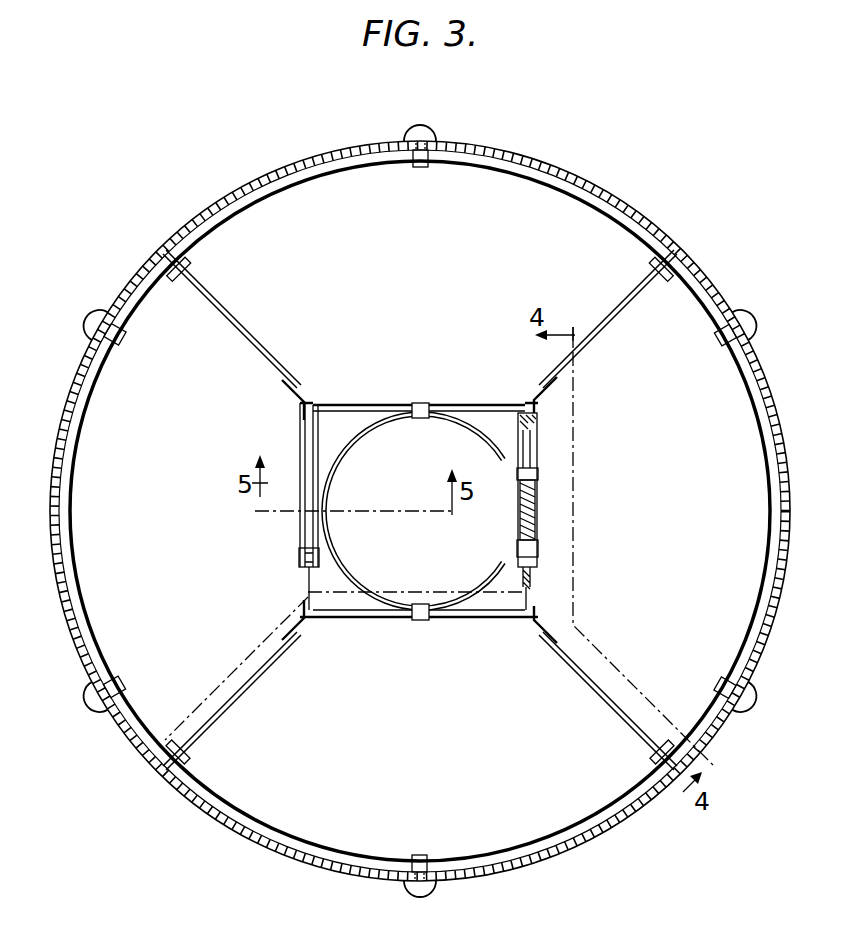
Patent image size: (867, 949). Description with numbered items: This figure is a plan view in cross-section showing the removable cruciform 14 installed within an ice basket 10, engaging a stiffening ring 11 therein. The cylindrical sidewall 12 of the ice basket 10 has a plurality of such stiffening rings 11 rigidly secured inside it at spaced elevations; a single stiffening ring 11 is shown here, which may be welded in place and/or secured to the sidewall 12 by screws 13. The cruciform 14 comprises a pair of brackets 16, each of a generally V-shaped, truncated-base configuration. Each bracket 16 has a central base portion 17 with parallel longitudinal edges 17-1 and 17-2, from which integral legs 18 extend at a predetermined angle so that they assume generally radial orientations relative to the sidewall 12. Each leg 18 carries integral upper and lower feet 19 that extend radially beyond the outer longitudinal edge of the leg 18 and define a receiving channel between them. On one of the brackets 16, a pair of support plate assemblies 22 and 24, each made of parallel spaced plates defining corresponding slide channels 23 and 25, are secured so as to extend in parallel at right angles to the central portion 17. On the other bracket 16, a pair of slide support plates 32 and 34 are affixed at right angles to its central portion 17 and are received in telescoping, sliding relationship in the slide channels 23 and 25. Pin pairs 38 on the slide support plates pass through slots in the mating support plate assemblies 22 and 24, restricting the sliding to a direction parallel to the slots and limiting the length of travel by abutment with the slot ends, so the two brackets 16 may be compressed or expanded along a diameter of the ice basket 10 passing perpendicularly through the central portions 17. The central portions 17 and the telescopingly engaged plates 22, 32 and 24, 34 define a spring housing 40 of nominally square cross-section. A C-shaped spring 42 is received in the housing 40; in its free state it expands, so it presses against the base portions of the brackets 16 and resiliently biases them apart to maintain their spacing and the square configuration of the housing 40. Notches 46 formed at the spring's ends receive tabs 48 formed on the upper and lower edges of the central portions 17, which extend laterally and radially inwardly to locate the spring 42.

The ice basket 10 is at (185, 196).
The stiffening ring 11 is at (530, 183).
The sidewall 12 is at (672, 228).
The screws 13 is at (107, 313).
The removable cruciform 14 is at (288, 328).
The bracket 16 is at (366, 385).
The central base portion 17 is at (455, 402).
The longitudinal edge 17-1 is at (320, 400).
The longitudinal edge 17-2 is at (528, 391).
The leg 18 is at (243, 690).
The feet 19 is at (193, 272).
The support plate assembly 22 is at (542, 436).
The slide channel 23 is at (540, 516).
The support plate assembly 24 is at (302, 432).
The slide channel 25 is at (303, 556).
The slide support plate 32 is at (575, 609).
The slide support plate 34 is at (300, 598).
The pin pair 38 is at (540, 474).
The spring housing 40 is at (380, 500).
The C-shaped spring 42 is at (349, 576).
The notches 46 is at (432, 416).
The tabs 48 is at (420, 403).